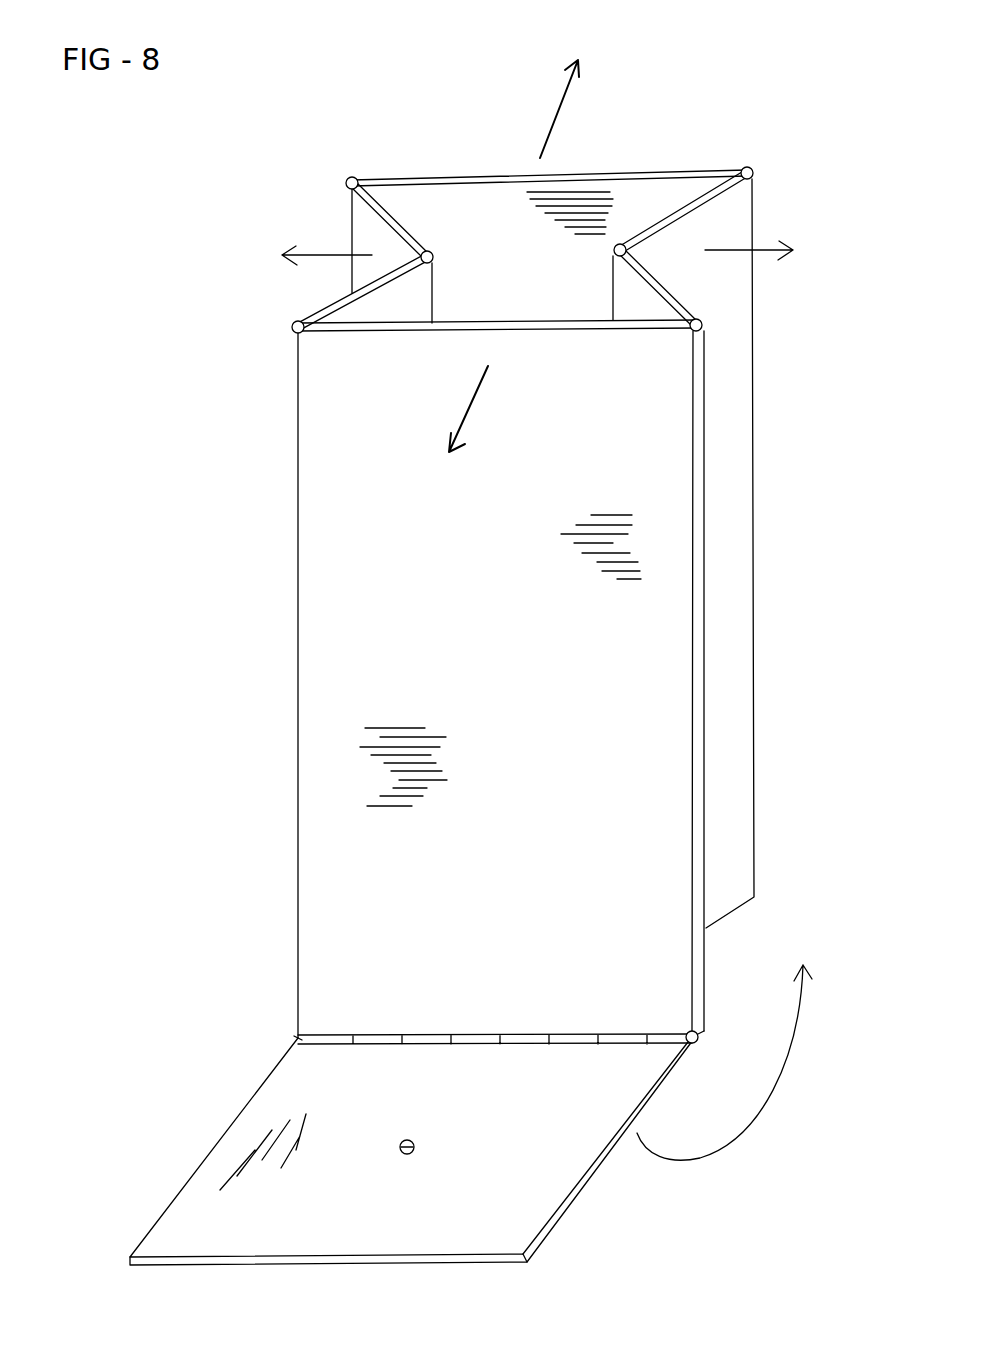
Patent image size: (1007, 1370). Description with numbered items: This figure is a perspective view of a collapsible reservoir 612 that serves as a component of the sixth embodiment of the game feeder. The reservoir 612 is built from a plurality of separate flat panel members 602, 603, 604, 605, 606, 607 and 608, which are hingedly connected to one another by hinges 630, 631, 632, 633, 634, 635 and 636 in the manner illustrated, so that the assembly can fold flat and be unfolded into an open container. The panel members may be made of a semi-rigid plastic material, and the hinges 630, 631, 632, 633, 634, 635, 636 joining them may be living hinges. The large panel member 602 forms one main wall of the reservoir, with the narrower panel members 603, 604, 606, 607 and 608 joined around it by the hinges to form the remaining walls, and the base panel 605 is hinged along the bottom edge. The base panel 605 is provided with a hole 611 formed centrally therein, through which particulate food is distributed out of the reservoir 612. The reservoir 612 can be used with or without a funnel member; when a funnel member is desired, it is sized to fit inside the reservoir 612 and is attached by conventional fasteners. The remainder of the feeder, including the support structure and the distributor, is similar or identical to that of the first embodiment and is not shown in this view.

The flat panel member 602 is at (386, 418).
The flat panel member 603 is at (652, 290).
The flat panel member 604 is at (683, 553).
The base panel 605 is at (562, 1128).
The flat panel member 606 is at (522, 300).
The flat panel member 607 is at (360, 224).
The flat panel member 608 is at (364, 292).
The hole 611 is at (403, 1142).
The collapsible reservoir 612 is at (199, 651).
The hinge 630 is at (295, 330).
The hinge 631 is at (704, 502).
The hinge 632 is at (750, 200).
The hinge 633 is at (752, 170).
The hinge 634 is at (352, 178).
The hinge 635 is at (430, 252).
The hinge 636 is at (298, 1038).